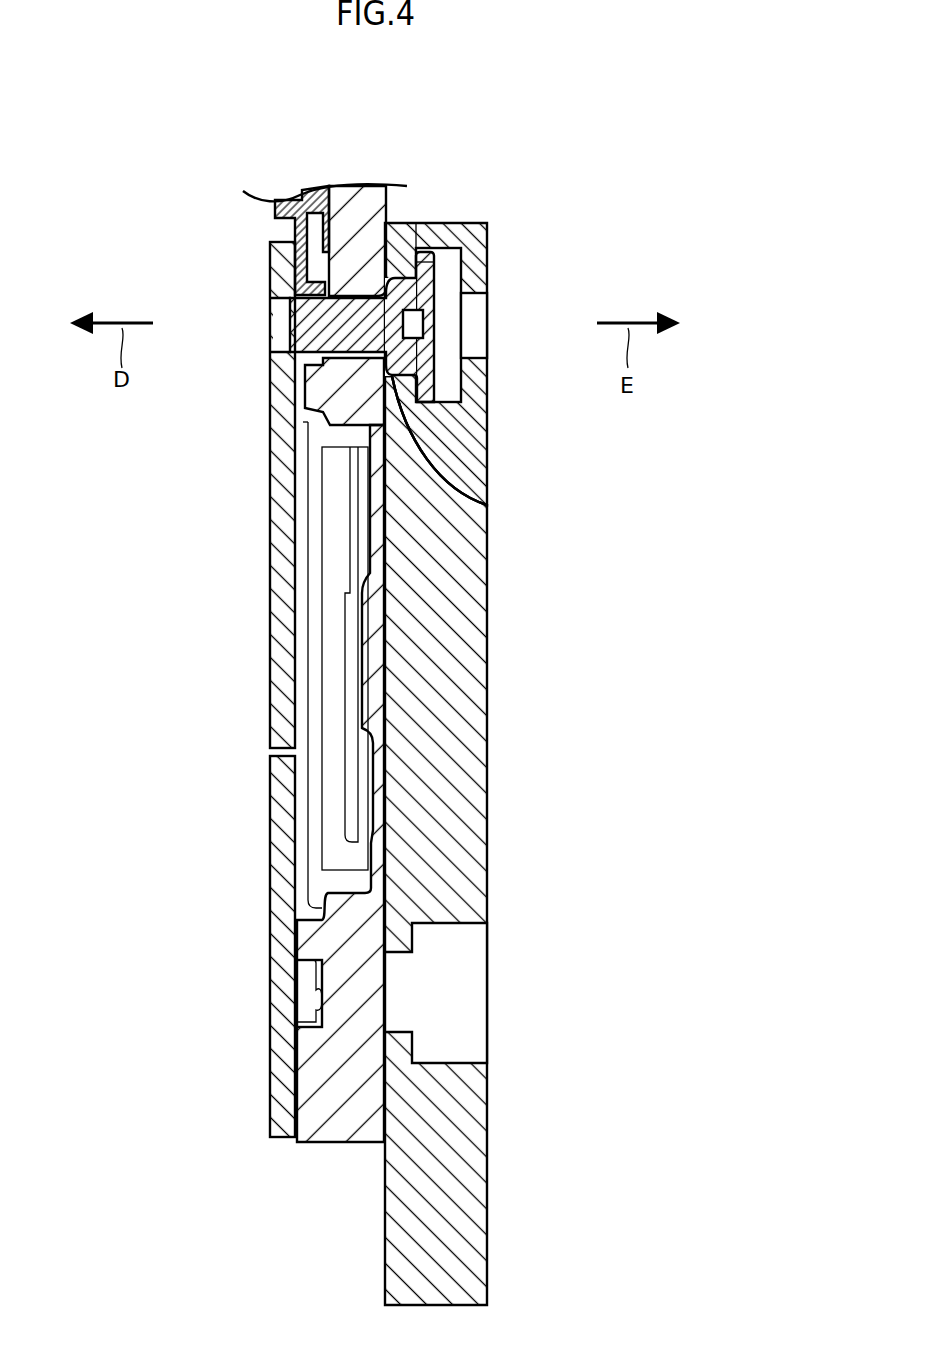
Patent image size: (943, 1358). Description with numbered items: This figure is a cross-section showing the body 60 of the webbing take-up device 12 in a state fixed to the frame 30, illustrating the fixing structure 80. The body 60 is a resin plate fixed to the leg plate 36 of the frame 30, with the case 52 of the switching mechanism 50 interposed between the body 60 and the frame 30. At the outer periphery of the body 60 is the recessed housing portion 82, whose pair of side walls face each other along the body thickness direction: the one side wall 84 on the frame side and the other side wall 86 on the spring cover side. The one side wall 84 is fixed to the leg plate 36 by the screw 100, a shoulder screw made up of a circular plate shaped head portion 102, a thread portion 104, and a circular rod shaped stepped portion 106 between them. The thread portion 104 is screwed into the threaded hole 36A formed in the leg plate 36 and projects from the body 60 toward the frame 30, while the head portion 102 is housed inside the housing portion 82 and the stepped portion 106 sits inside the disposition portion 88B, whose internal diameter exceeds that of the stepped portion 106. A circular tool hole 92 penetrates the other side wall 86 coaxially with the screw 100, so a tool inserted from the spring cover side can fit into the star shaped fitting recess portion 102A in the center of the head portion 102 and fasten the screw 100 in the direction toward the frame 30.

The webbing take-up device 12 is at (441, 113).
The frame 30 is at (276, 742).
The leg plate 36 is at (269, 626).
The threaded hole 36A is at (271, 300).
The switching mechanism 50 is at (328, 1145).
The case 52 is at (291, 1143).
The body 60 is at (485, 648).
The fixing structure 80 is at (509, 326).
The housing portion 82 is at (458, 249).
The one side wall 84 is at (487, 447).
The other side wall 86 is at (470, 372).
The disposition portion 88B is at (487, 502).
The tool hole 92 is at (478, 300).
The screw 100 is at (379, 273).
The head portion 102 is at (436, 279).
The fitting recess portion 102A is at (425, 337).
The thread portion 104 is at (279, 382).
The stepped portion 106 is at (417, 222).